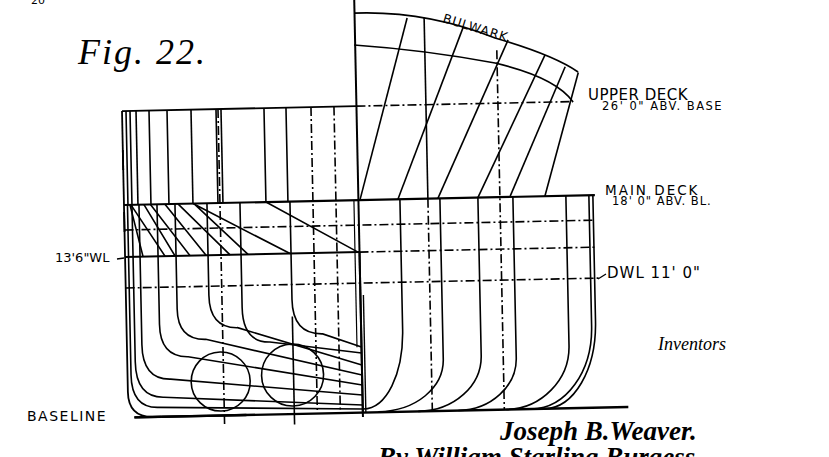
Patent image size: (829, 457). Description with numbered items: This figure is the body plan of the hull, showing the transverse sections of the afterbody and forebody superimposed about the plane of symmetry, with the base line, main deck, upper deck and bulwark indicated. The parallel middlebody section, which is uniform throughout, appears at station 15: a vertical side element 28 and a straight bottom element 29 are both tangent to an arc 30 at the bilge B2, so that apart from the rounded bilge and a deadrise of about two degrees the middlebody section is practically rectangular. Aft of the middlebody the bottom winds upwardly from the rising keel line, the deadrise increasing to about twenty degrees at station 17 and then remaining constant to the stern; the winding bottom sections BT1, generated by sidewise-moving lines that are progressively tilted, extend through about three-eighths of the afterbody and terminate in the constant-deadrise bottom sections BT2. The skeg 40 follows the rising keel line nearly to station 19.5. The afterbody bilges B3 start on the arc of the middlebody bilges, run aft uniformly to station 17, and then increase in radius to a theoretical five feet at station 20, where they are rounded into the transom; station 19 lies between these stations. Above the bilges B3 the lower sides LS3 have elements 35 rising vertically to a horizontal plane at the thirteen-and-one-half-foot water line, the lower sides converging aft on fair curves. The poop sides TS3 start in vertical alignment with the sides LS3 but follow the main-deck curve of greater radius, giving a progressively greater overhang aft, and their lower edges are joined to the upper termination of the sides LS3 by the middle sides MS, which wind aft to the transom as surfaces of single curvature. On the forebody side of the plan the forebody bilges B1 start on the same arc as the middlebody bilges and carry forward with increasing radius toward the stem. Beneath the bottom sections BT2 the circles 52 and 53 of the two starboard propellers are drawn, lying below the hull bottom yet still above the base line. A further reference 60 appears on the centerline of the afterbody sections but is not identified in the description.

The station 15 is at (123, 111).
The station 17 is at (136, 111).
The station 19 is at (191, 111).
The station 19.5 is at (230, 104).
The station 20 is at (265, 111).
The poop structure sides TS3 is at (123, 159).
The middle sides MS is at (124, 222).
The afterbody lower sides LS3 is at (150, 276).
The side elements 35 is at (133, 303).
The vertical side element 28 is at (130, 343).
The middlebody bilge B2 is at (128, 390).
The afterbody bilges B3 is at (203, 318).
The winding bottom sections BT1 is at (182, 396).
The constant-deadrise bottom sections BT2 is at (290, 321).
The propeller circle 52 is at (223, 420).
The propeller circle 53 is at (293, 411).
The bilge arc 30 is at (140, 415).
The straight bottom element 29 is at (172, 419).
The centerline stern convergence 60 is at (358, 310).
The skeg 40 is at (360, 372).
The forebody bilges B1 is at (472, 393).